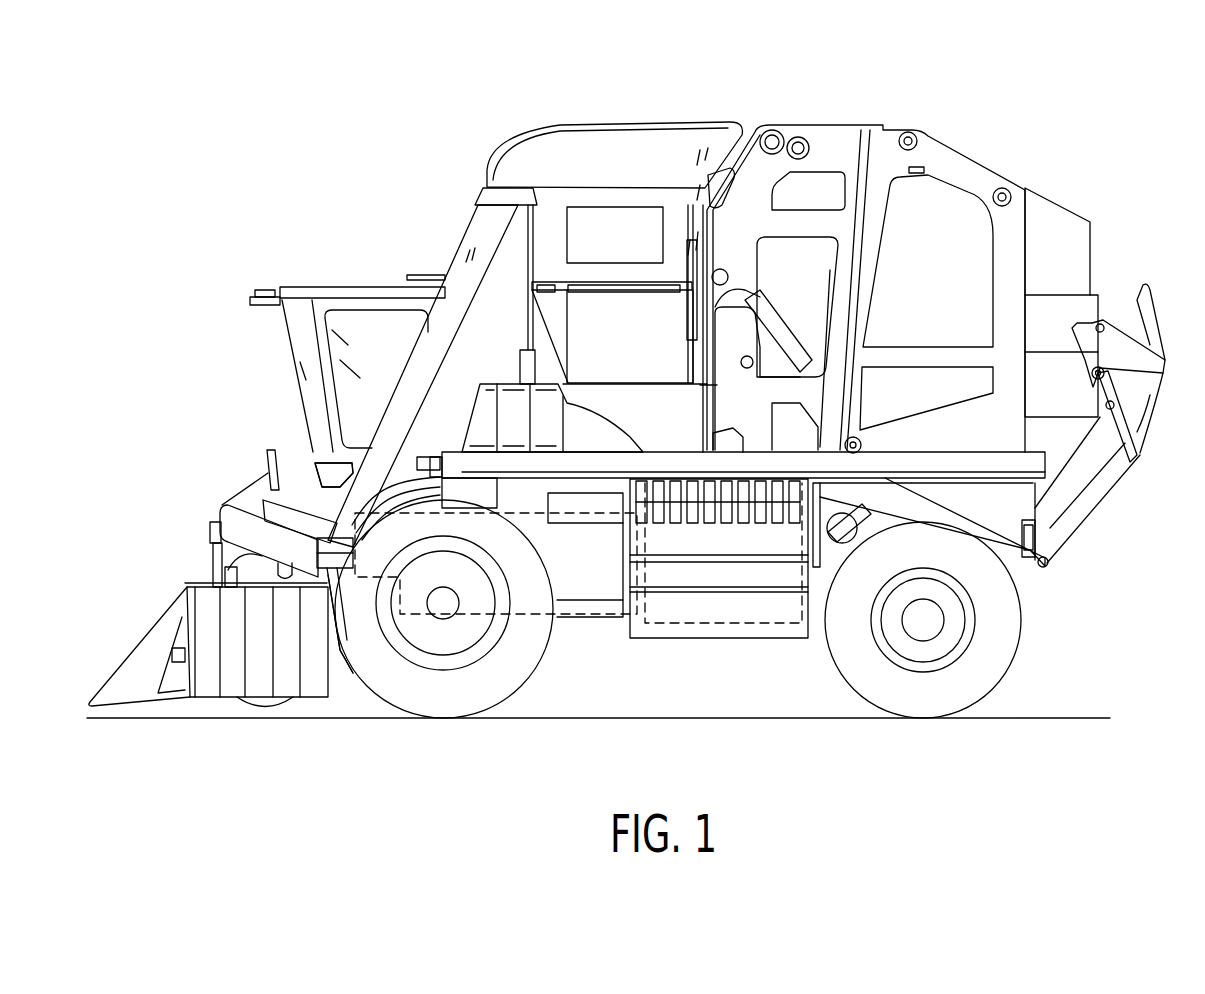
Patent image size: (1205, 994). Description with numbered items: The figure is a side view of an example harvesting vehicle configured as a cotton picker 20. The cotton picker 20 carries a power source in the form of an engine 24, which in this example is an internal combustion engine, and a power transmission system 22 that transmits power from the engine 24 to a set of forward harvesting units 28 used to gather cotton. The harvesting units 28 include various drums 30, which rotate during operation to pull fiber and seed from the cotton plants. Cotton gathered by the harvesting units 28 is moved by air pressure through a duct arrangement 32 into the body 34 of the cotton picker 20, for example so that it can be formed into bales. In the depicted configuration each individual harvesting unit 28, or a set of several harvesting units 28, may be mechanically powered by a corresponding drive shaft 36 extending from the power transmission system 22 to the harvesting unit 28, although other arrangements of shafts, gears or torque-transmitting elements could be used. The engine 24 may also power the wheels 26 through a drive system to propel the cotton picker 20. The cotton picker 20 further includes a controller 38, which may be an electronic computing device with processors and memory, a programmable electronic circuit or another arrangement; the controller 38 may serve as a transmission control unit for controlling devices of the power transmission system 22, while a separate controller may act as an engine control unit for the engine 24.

The cotton picker 20 is at (626, 438).
The power transmission system 22 is at (600, 618).
The engine 24 is at (725, 623).
The wheels 26 is at (457, 700).
The harvesting units 28 is at (196, 566).
The drums 30 is at (240, 697).
The duct arrangement 32 is at (463, 248).
The body 34 is at (605, 122).
The drive shaft 36 is at (353, 673).
The controller 38 is at (437, 488).